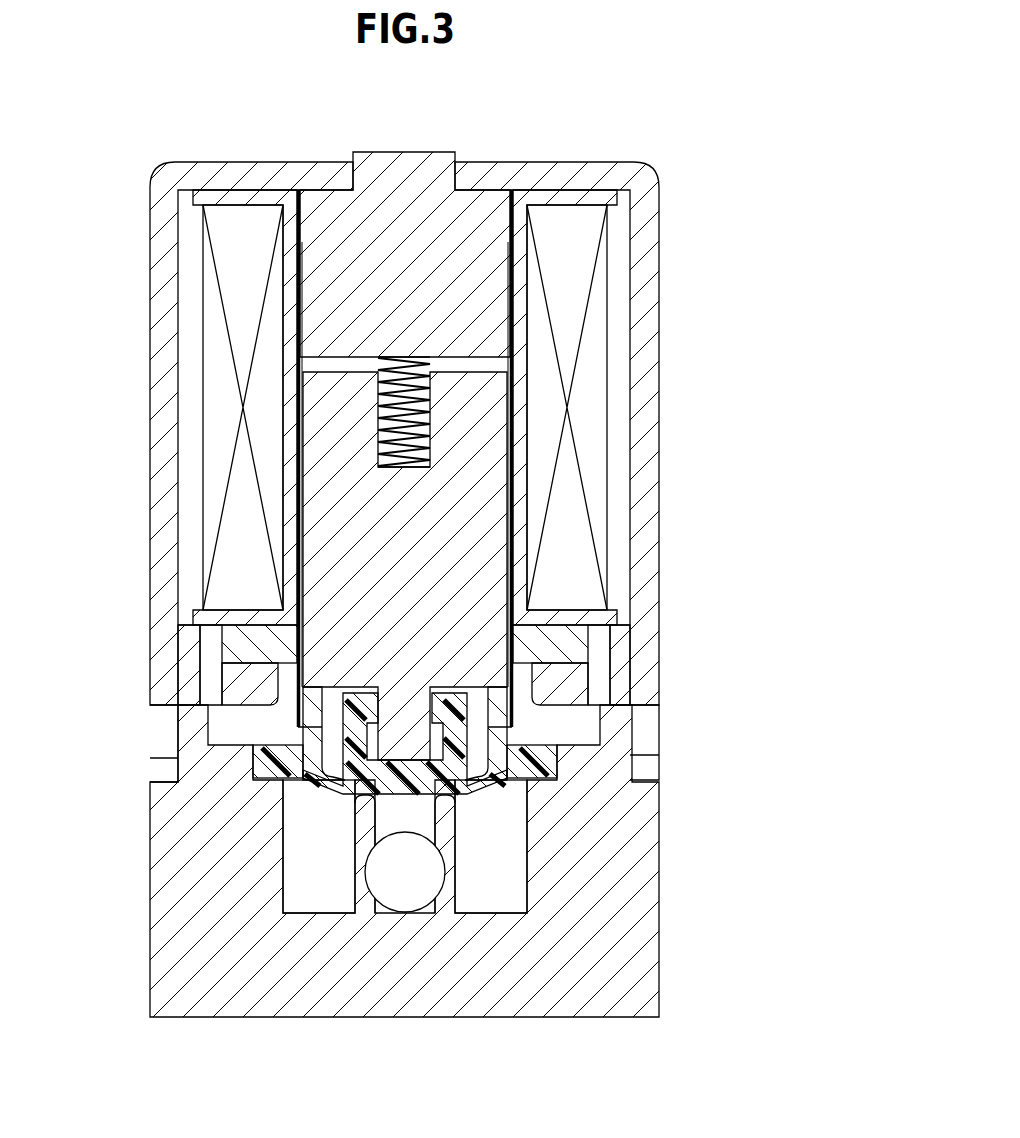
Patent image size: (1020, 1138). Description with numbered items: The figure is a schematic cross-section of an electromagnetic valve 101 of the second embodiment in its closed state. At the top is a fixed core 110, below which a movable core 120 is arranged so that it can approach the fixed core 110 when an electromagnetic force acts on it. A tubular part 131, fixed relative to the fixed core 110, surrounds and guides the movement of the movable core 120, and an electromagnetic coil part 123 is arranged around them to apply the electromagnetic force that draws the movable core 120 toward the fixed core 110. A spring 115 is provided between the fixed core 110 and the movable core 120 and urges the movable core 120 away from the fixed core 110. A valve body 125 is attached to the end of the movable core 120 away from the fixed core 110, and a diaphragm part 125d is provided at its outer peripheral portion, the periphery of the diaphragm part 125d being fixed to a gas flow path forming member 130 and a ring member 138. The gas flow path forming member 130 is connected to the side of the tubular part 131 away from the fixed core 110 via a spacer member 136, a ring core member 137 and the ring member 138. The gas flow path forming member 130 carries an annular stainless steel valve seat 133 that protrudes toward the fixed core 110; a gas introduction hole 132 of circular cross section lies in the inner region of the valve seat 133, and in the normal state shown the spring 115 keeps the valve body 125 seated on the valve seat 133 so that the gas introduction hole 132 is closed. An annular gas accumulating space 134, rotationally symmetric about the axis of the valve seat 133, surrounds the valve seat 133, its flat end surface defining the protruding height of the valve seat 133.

The electromagnetic valve 101 is at (680, 124).
The fixed core 110 is at (403, 150).
The tubular part 131 is at (504, 247).
The electromagnetic coil part 123 is at (582, 248).
The spring 115 is at (432, 388).
The movable core 120 is at (470, 465).
The spacer member 136 is at (567, 645).
The ring core member 137 is at (572, 685).
The ring member 138 is at (575, 725).
The diaphragm part 125d is at (333, 778).
The valve seat 133 is at (363, 814).
The gas accumulating space 134 is at (300, 893).
The gas flow path forming member 130 is at (620, 890).
The valve body 125 is at (387, 782).
The gas introduction hole 132 is at (413, 812).